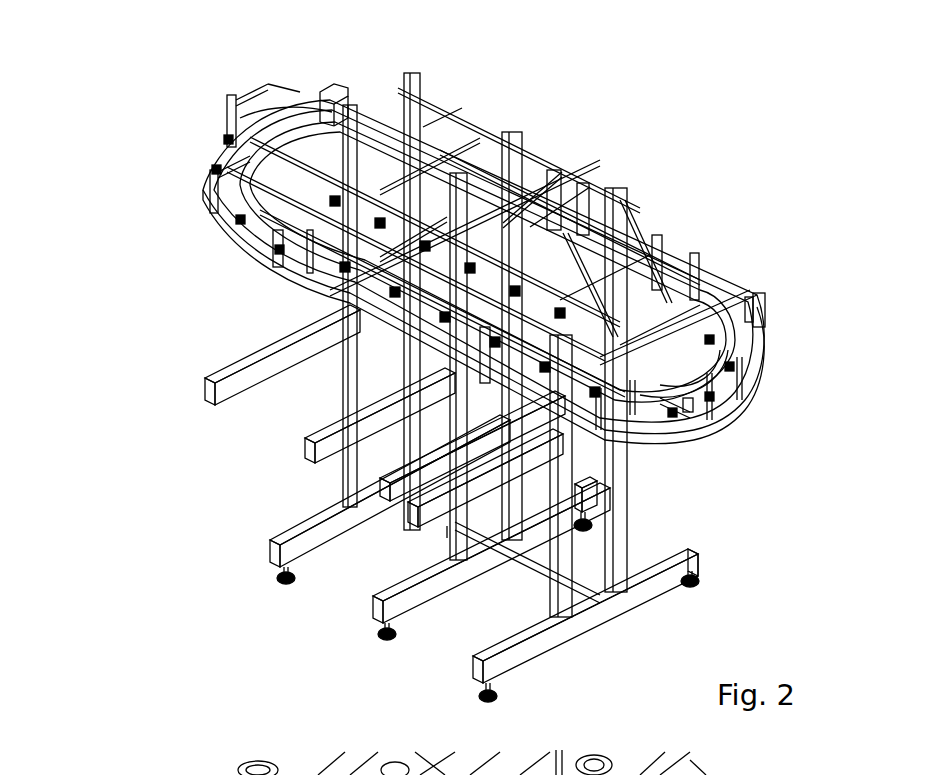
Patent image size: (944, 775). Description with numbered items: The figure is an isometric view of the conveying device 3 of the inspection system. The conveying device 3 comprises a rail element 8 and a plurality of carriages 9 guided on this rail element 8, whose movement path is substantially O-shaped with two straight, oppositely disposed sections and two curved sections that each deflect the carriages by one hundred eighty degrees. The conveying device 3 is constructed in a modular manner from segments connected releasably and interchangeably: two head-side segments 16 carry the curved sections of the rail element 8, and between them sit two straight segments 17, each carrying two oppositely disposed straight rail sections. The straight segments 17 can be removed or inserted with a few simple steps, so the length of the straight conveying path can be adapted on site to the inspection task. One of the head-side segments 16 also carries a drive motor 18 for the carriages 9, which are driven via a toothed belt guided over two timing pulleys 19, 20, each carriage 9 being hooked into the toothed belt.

The conveying device 3 is at (463, 355).
The rail element 8 is at (680, 403).
The carriages 9 is at (683, 407).
The head-side segments 16 is at (185, 195).
The straight segments 17 is at (540, 137).
The drive motor 18 is at (330, 90).
The timing pulley 19 is at (757, 292).
The timing pulley 20 is at (308, 107).